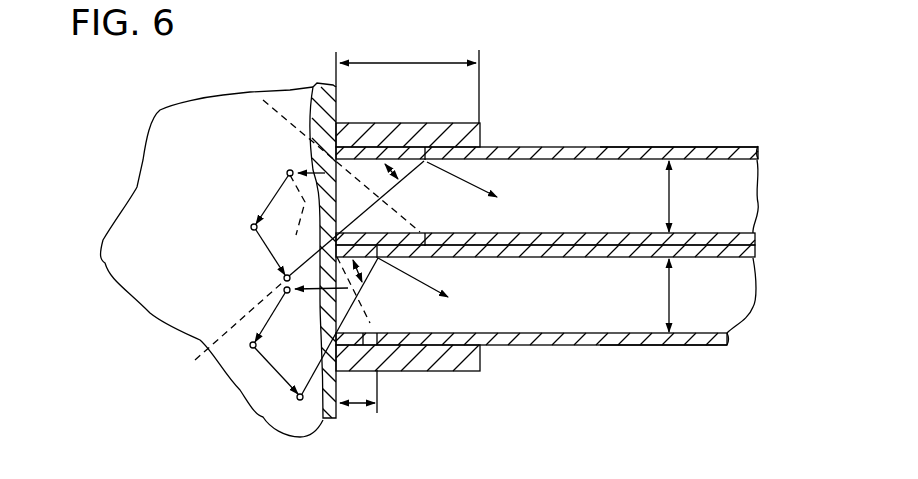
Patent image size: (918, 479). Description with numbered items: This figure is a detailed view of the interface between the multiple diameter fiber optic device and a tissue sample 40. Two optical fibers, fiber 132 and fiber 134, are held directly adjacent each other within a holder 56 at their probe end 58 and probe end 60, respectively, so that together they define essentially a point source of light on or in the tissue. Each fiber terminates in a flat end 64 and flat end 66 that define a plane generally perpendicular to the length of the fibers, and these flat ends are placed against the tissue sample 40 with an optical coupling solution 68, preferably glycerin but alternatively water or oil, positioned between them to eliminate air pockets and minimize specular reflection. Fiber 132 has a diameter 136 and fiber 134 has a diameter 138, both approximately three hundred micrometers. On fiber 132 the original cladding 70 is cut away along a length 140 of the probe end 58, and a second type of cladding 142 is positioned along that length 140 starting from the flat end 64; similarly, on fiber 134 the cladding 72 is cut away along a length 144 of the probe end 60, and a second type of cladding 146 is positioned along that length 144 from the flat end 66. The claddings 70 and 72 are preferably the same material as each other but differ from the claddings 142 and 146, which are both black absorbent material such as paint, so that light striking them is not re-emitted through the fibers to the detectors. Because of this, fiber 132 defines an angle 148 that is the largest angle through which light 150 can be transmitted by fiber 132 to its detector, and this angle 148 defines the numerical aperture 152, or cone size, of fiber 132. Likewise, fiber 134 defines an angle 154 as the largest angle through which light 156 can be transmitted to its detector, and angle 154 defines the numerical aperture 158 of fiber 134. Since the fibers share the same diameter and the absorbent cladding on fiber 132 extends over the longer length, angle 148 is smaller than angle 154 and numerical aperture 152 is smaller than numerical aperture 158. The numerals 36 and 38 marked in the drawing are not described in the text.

The first laser source 36 is at (318, 172).
The second laser source 38 is at (304, 292).
The tissue sample 40 is at (177, 123).
The holder 56 is at (465, 371).
The probe end 58 is at (562, 170).
The probe end 60 is at (560, 346).
The flat end 64 is at (340, 205).
The flat end 66 is at (342, 304).
The optical coupling solution 68 is at (327, 102).
The cladding 70 is at (637, 146).
The cladding 72 is at (642, 347).
The fiber 132 is at (750, 205).
The fiber 134 is at (747, 288).
The diameter 136 is at (672, 200).
The diameter 138 is at (672, 306).
The length 140 is at (394, 62).
The second type of cladding 142 is at (430, 147).
The length 144 is at (356, 405).
The second type of cladding 146 is at (378, 373).
The angle 148 is at (392, 173).
The light 150 is at (398, 182).
The numerical aperture 152 is at (282, 115).
The angle 154 is at (362, 277).
The light 156 is at (430, 282).
The numerical aperture 158 is at (295, 415).